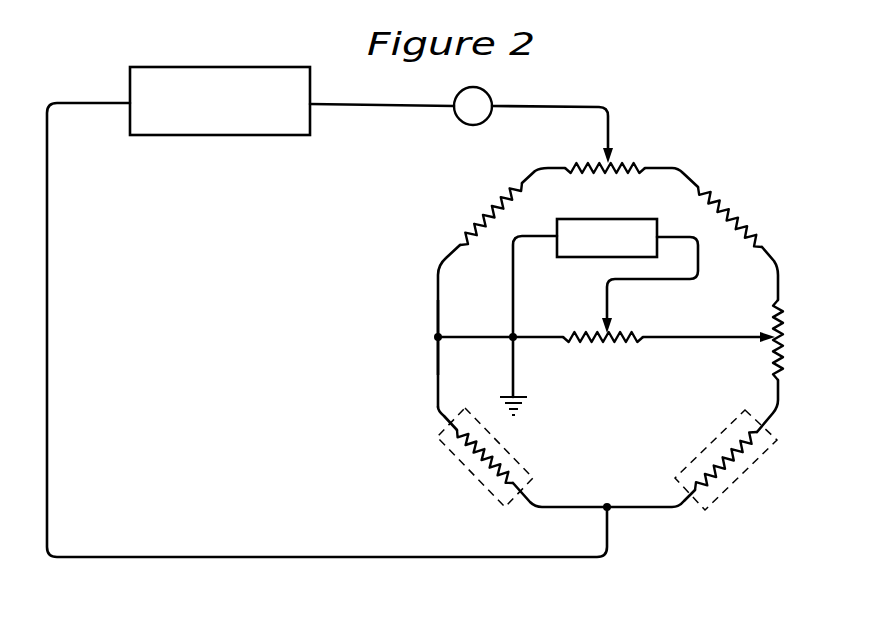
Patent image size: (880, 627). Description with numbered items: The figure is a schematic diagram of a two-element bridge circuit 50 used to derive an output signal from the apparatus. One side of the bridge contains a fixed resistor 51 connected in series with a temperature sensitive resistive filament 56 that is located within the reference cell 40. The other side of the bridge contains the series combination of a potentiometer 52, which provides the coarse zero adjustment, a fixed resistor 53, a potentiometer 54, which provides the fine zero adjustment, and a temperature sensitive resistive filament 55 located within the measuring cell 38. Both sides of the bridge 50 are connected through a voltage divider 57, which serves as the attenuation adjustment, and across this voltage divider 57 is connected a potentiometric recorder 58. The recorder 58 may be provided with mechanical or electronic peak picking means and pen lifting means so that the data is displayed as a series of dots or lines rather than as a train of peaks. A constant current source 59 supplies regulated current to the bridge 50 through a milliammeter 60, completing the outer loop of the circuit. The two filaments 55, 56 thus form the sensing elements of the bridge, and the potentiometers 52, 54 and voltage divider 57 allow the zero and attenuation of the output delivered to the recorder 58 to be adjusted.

The measuring cell 38 is at (738, 478).
The reference cell 40 is at (472, 473).
The two-element bridge circuit 50 is at (437, 319).
The fixed resistor 51 is at (493, 206).
The potentiometer 52 is at (626, 163).
The fixed resistor 53 is at (733, 214).
The potentiometer 54 is at (785, 330).
The temperature sensitive resistive filament 55 is at (712, 463).
The temperature sensitive resistive filament 56 is at (503, 457).
The voltage divider 57 is at (590, 344).
The potentiometric recorder 58 is at (600, 218).
The constant current source 59 is at (200, 137).
The milliammeter 60 is at (464, 124).